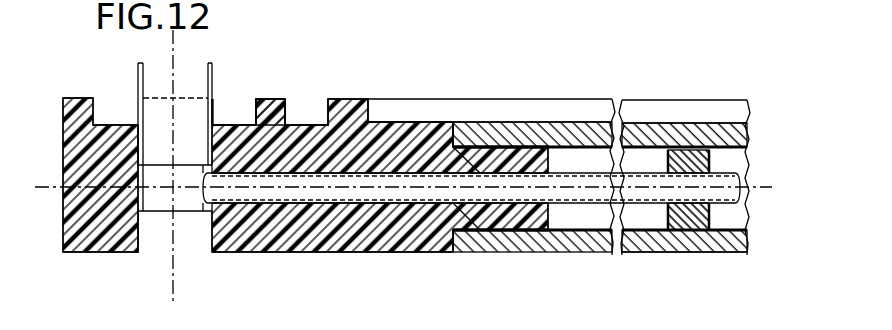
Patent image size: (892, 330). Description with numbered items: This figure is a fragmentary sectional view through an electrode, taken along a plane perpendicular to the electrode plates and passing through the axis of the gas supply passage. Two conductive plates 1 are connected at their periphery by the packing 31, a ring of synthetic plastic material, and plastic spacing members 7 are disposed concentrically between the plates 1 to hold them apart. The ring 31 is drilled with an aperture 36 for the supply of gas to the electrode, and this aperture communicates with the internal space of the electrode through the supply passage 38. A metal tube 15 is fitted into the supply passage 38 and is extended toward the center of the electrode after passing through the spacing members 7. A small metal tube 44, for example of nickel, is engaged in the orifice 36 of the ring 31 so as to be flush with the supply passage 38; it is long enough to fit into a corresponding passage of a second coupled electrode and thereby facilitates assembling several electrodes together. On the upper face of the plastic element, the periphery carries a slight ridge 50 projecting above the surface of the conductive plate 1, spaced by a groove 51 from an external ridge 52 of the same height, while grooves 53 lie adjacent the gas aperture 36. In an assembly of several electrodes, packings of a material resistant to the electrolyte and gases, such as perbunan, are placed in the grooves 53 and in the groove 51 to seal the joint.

The conductive plate 1 is at (505, 135).
The spacing member 7 is at (703, 213).
The metal tube 15 is at (578, 185).
The packing 31 is at (335, 228).
The aperture 36 is at (206, 232).
The supply passage 38 is at (428, 168).
The small metal tube 44 is at (137, 86).
The ridge 50 is at (363, 108).
The groove 51 is at (312, 118).
The external ridge 52 is at (83, 97).
The groove 53 is at (233, 120).